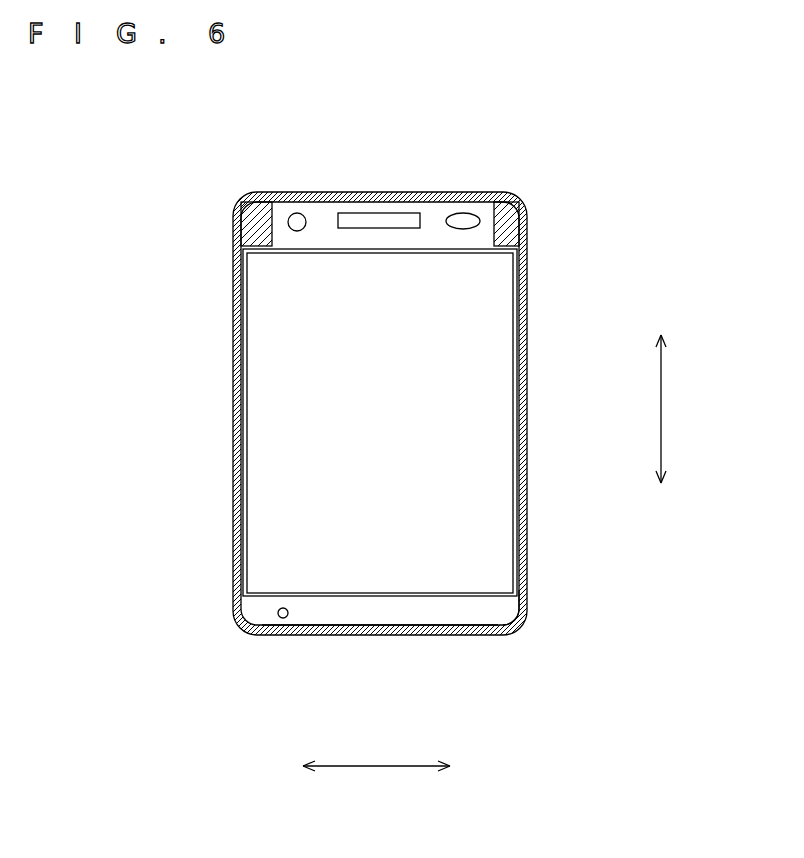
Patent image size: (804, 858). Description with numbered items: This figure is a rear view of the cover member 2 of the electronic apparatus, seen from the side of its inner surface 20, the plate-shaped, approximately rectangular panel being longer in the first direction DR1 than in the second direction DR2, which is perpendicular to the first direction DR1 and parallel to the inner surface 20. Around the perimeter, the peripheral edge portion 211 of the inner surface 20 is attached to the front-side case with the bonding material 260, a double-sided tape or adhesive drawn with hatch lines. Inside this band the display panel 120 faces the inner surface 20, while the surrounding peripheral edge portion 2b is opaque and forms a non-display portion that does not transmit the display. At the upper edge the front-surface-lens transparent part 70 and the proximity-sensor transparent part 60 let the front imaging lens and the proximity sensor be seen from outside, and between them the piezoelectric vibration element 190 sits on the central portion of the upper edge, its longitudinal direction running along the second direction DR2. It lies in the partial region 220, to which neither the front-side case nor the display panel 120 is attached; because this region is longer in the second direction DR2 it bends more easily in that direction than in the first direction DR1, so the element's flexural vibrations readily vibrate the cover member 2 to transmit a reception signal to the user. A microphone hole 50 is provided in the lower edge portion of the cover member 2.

The cover member 2 is at (240, 195).
The bonding material 260 is at (232, 222).
The peripheral edge portion 211 is at (526, 210).
The partial region 220 is at (318, 222).
The display panel 120 is at (283, 393).
The front-surface-lens transparent part 70 is at (297, 213).
The piezoelectric vibration element 190 is at (409, 222).
The proximity-sensor transparent part 60 is at (463, 222).
The microphone hole 50 is at (285, 620).
The inner surface 20 is at (447, 618).
The peripheral edge portion 2b is at (500, 615).
The first direction DR1 is at (661, 410).
The second direction DR2 is at (376, 769).